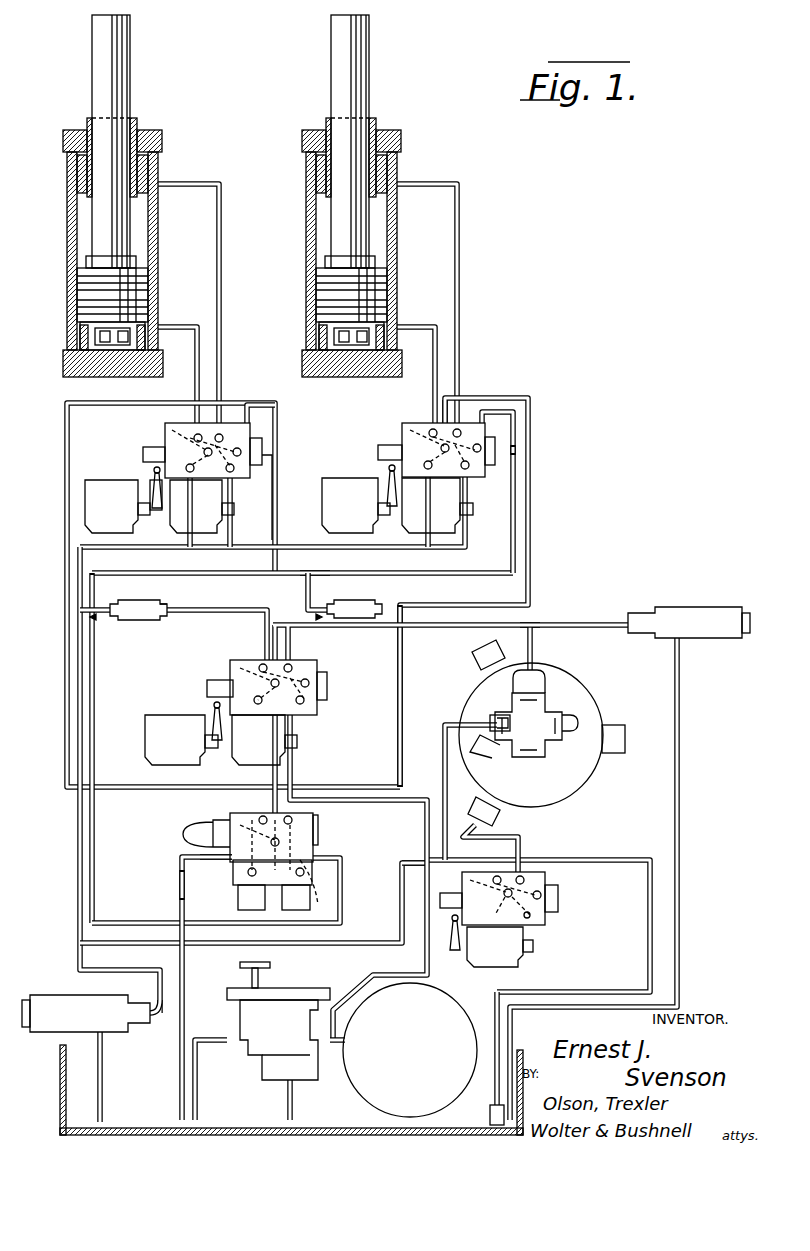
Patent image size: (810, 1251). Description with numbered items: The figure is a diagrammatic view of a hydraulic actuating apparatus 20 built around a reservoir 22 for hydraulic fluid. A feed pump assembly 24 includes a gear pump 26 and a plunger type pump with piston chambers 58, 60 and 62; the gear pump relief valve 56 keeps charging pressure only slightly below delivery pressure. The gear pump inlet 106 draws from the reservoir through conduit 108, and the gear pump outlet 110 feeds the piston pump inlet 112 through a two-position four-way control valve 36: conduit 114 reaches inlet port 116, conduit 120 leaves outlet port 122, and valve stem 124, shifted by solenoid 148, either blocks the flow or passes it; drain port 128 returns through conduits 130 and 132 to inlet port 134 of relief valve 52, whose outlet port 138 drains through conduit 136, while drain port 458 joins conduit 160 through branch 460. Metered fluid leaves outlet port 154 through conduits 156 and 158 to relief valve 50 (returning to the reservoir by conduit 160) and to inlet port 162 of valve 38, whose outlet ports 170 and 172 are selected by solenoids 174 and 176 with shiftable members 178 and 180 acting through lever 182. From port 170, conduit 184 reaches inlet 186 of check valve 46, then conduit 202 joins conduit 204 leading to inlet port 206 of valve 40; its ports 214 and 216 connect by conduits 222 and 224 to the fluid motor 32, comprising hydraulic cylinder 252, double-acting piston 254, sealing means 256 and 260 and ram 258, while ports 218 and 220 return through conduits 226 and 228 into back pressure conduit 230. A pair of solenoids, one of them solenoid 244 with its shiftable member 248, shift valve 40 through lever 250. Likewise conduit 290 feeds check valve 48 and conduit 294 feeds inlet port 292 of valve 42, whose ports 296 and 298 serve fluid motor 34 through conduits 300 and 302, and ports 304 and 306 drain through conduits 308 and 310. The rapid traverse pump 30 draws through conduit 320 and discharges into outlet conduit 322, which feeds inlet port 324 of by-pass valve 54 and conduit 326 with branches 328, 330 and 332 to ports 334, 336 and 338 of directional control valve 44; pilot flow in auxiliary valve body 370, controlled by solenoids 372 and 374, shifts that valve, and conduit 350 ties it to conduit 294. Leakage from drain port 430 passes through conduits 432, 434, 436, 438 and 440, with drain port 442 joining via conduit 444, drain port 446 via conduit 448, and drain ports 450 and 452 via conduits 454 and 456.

The apparatus 20 is at (548, 340).
The reservoir 22 is at (60, 1095).
The feed pump assembly 24 is at (535, 710).
The gear pump 26 is at (556, 696).
The rapid traverse pump 30 is at (348, 1096).
The fluid motor 32 is at (124, 209).
The fluid motor 34 is at (405, 168).
The two-position four-way control valve 36 is at (539, 909).
The two-position four-way control valve 38 is at (232, 715).
The two-position four-way control valve 40 is at (206, 458).
The two-position four-way control valve 42 is at (448, 462).
The three-position four-way directional control valve 44 is at (259, 883).
The check valve 46 is at (135, 622).
The check valve 48 is at (356, 601).
The relief valve 50 is at (688, 606).
The relief valve 52 is at (60, 994).
The manually adjustable by-pass valve 54 is at (264, 1031).
The relief valve 56 is at (498, 712).
The piston chamber 58 is at (512, 660).
The piston chamber 60 is at (616, 754).
The piston chamber 62 is at (494, 822).
The inlet 106 is at (579, 724).
The conduit 108 is at (650, 955).
The gear pump outlet 110 is at (495, 725).
The piston pump inlet 112 is at (490, 757).
The conduit 114 is at (444, 795).
The inlet port 116 is at (532, 912).
The conduit 120 is at (525, 848).
The outlet port 122 is at (526, 882).
The valve stem 124 is at (456, 904).
The drain port 128 is at (502, 901).
The conduit 130 is at (362, 940).
The conduit 132 is at (78, 906).
The inlet port 134 is at (152, 1018).
The conduit 136 is at (103, 1095).
The outlet port 138 is at (102, 1033).
The solenoid 148 is at (515, 965).
The outlet port 154 is at (545, 660).
The conduit 156 is at (532, 642).
The conduit 158 is at (430, 628).
The conduit 160 is at (680, 745).
The inlet port 162 is at (300, 708).
The outlet port 170 is at (260, 666).
The outlet port 172 is at (292, 670).
The solenoid 174 is at (291, 762).
The solenoid 176 is at (150, 730).
The shiftable member 178 is at (230, 740).
The shiftable member 180 is at (206, 755).
The pivotally mounted lever 182 is at (207, 715).
The conduit 184 is at (221, 608).
The inlet 186 is at (167, 604).
The conduit 202 is at (82, 605).
The conduit 204 is at (66, 555).
The inlet port 206 is at (156, 432).
The outlet port 214 is at (197, 434).
The outlet port 216 is at (247, 418).
The port 218 is at (156, 466).
The port 220 is at (263, 455).
The conduit 222 is at (178, 322).
The conduit 224 is at (222, 270).
The conduit 226 is at (188, 539).
The conduit 228 is at (233, 518).
The back pressure conduit 230 is at (292, 546).
The solenoid 244 is at (100, 488).
The shiftable member 248 is at (243, 496).
The pivotally mounted lever 250 is at (152, 488).
The hydraulic cylinder 252 is at (158, 226).
The double-acting piston 254 is at (122, 296).
The closing means 256 is at (100, 372).
The ram 258 is at (131, 62).
The closing means 260 is at (138, 130).
The conduit 290 is at (310, 600).
The inlet port 292 is at (456, 414).
The conduit 294 is at (531, 510).
The port 296 is at (431, 428).
The port 298 is at (486, 434).
The conduit 300 is at (437, 328).
The conduit 302 is at (460, 248).
The port 304 is at (430, 462).
The port 306 is at (486, 460).
The conduit 308 is at (408, 528).
The conduit 310 is at (468, 535).
The conduit 320 is at (504, 1022).
The outlet conduit 322 is at (333, 1050).
The inlet port 324 is at (262, 1045).
The conduit 326 is at (400, 862).
The branch conduit 328 is at (232, 815).
The branch conduit 330 is at (277, 788).
The branch conduit 332 is at (292, 814).
The port 334 is at (248, 870).
The inlet port 336 is at (272, 875).
The port 338 is at (317, 889).
The conduit 350 is at (398, 766).
The auxiliary valve body 370 is at (232, 867).
The solenoid 372 is at (246, 912).
The solenoid 374 is at (292, 912).
The drain port 430 is at (241, 450).
The conduit 432 is at (272, 507).
The drain conduit 434 is at (188, 572).
The conduit 436 is at (94, 668).
The conduit 438 is at (99, 925).
The drain conduit 440 is at (184, 1027).
The drain port 442 is at (514, 447).
The conduit 444 is at (514, 482).
The drain port 446 is at (310, 700).
The conduit 448 is at (308, 578).
The drain port 450 is at (185, 845).
The drain port 452 is at (410, 823).
The conduit 454 is at (180, 888).
The conduit 456 is at (358, 890).
The drain port 458 is at (546, 896).
The branch 460 is at (623, 870).